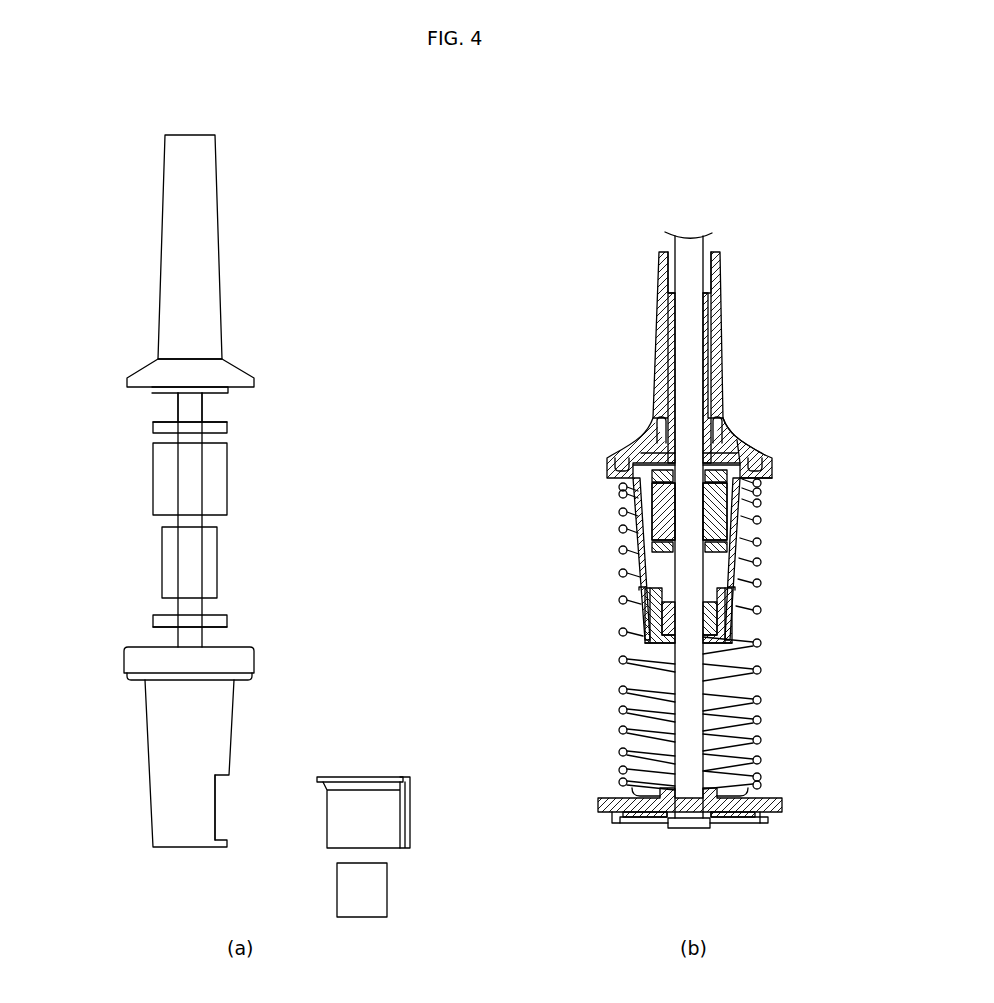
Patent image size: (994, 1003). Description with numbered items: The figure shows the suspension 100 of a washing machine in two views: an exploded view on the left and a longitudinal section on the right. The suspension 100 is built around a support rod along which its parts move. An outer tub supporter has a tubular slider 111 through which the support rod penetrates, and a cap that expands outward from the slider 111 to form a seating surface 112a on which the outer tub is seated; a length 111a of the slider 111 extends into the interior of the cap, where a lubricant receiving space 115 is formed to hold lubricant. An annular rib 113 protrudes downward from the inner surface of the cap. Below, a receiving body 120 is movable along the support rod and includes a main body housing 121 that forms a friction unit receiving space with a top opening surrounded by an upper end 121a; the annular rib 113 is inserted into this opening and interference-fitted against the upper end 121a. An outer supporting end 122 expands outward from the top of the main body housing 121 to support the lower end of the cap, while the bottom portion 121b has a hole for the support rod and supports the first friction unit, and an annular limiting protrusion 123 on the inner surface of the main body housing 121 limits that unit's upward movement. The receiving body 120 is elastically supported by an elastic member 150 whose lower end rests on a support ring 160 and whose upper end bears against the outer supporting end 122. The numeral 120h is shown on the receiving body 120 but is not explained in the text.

The suspension 100 is at (97, 191).
The tubular slider 111 is at (713, 332).
The length of the slider 111a is at (720, 433).
The seating surface 112a is at (730, 443).
The annular rib 113 is at (637, 450).
The lubricant receiving space 115 is at (707, 437).
The receiving body 120 is at (150, 760).
The housing hole 120h is at (222, 802).
The main body housing 121 is at (742, 502).
The upper end of the main body housing 121a is at (760, 452).
The bottom portion 121b is at (717, 643).
The outer supporting end 122 is at (773, 460).
The limiting protrusion 123 is at (733, 585).
The elastic member 150 is at (619, 730).
The support ring 160 is at (600, 798).